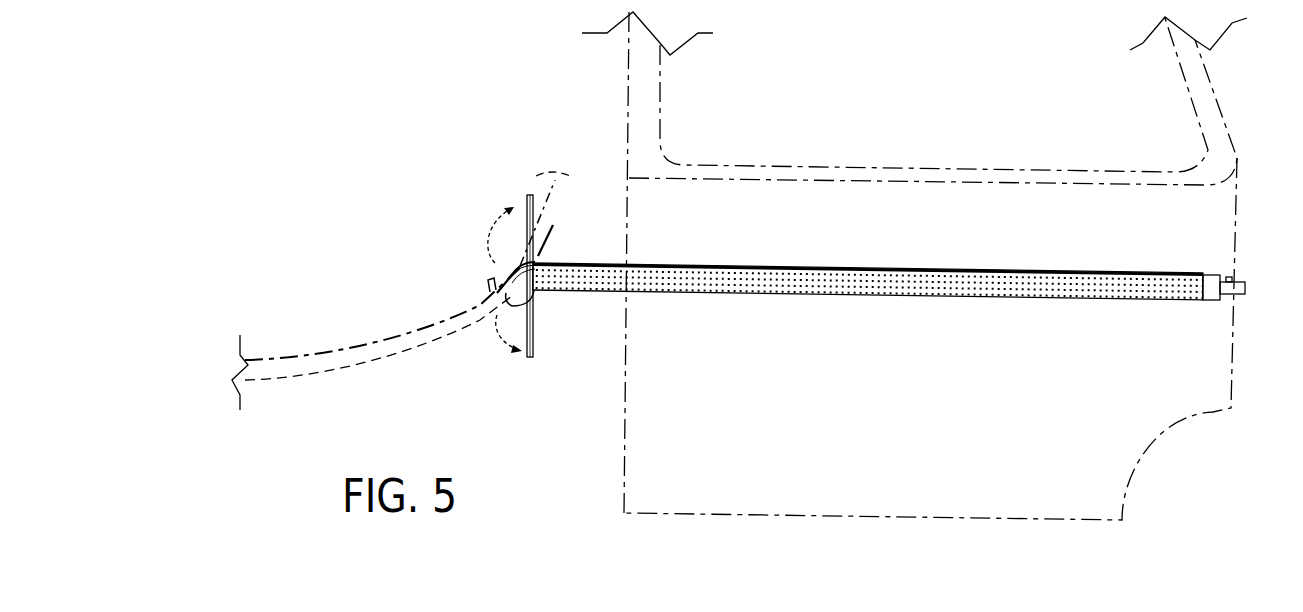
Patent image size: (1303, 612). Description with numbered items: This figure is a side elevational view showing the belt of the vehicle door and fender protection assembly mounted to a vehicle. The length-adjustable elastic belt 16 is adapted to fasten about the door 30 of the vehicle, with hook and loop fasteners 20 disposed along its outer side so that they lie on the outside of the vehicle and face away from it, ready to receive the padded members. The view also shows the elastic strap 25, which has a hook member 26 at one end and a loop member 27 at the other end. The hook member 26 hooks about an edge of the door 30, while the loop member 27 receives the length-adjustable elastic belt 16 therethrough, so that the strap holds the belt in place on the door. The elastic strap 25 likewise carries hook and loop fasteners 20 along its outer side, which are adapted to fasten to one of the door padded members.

The length-adjustable elastic belt 16 is at (368, 357).
The hook and loop fasteners 20 is at (703, 275).
The elastic strap 25 is at (597, 265).
The hook member 26 is at (1215, 293).
The loop member 27 is at (520, 303).
The door 30 is at (1210, 222).